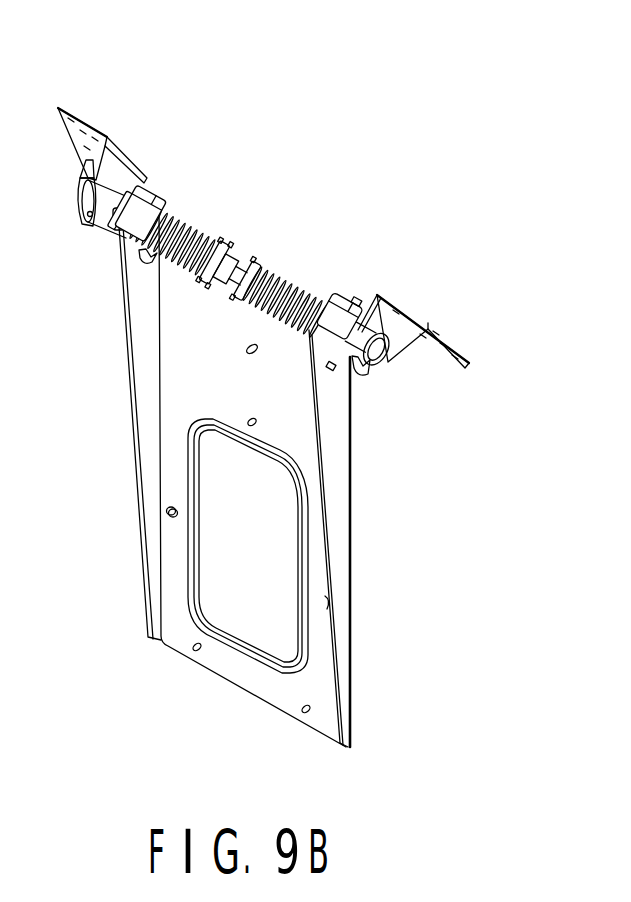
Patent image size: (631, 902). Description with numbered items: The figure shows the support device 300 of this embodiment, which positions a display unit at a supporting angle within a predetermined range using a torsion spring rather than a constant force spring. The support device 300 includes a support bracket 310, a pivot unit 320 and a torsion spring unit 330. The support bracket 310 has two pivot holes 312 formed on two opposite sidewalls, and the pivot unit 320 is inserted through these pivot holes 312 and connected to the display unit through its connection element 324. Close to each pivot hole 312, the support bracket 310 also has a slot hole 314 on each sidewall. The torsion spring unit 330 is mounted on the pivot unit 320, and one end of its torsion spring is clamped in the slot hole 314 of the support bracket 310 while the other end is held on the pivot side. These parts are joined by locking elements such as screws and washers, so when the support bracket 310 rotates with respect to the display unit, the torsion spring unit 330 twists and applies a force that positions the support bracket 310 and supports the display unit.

The support device 300 is at (494, 34).
The support bracket 310 is at (332, 468).
The pivot hole 312 is at (160, 196).
The slot hole 314 is at (145, 259).
The pivot unit 320 is at (362, 306).
The connection element 324 is at (415, 312).
The torsion spring unit 330 is at (297, 254).